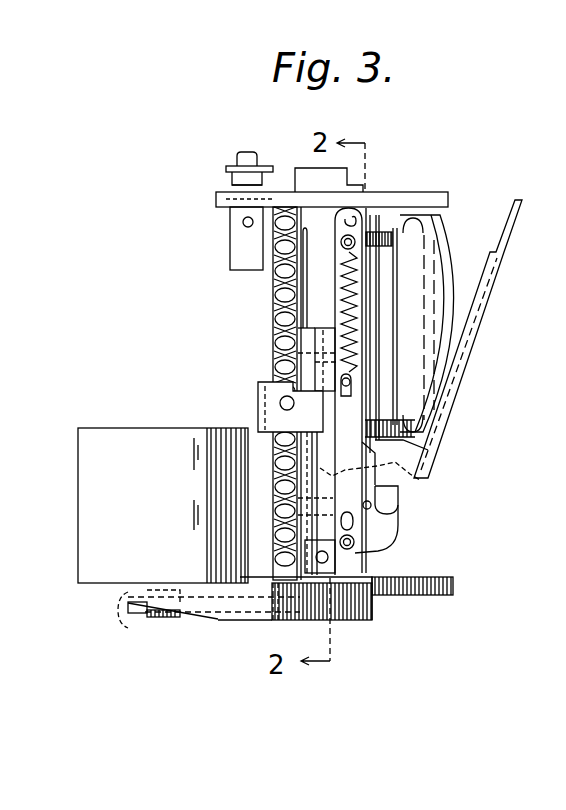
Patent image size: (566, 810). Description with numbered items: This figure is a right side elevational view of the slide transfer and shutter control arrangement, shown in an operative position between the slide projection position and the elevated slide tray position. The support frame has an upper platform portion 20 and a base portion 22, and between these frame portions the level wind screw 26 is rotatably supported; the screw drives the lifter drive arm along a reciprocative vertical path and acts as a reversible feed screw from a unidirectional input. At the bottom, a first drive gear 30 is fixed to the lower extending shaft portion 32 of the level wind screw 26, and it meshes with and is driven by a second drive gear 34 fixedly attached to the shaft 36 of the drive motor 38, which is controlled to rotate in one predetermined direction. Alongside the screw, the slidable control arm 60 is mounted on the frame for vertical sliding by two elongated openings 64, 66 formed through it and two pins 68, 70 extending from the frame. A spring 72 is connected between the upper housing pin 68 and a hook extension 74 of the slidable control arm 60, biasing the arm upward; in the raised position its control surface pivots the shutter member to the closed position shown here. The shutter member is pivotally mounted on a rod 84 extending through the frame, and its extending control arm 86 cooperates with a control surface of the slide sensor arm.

The upper platform portion 20 is at (398, 196).
The base portion 22 is at (373, 612).
The level wind screw 26 is at (273, 330).
The first drive gear 30 is at (228, 607).
The lower extending shaft portion 32 is at (280, 607).
The second drive gear 34 is at (138, 613).
The shaft 36 is at (120, 617).
The drive motor 38 is at (105, 567).
The slidable control arm 60 is at (388, 518).
The elongated opening 64 is at (357, 224).
The elongated opening 66 is at (351, 527).
The upper housing pin 68 is at (355, 240).
The pin 70 is at (353, 545).
The spring 72 is at (345, 288).
The hook extension 74 is at (352, 386).
The rod 84 is at (371, 505).
The extending control arm 86 is at (422, 479).